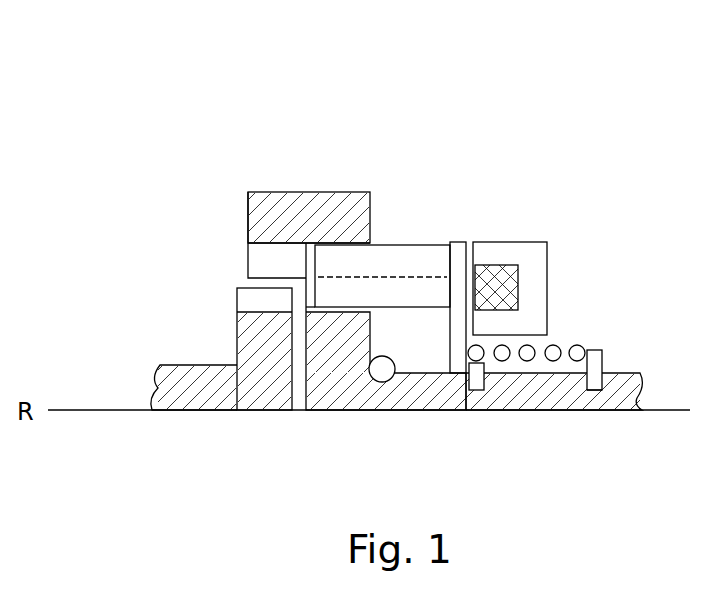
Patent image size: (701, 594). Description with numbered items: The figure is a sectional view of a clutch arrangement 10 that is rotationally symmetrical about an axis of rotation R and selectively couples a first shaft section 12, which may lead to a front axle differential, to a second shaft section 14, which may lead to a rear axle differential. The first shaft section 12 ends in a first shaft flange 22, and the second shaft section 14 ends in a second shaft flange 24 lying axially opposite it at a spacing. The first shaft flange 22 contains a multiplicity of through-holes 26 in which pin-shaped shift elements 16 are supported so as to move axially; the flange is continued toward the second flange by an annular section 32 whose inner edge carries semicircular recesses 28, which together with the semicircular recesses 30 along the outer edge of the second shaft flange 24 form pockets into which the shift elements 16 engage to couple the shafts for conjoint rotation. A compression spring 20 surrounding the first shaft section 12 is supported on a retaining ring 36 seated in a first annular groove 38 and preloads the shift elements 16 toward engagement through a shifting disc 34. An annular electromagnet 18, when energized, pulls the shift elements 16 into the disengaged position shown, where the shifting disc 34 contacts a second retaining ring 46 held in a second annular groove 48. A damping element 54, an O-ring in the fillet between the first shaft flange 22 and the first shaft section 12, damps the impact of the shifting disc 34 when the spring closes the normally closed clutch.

The clutch arrangement 10 is at (498, 118).
The first shaft section 12 is at (540, 397).
The second shaft section 14 is at (190, 378).
The shift elements 16 is at (394, 258).
The electromagnet 18 is at (528, 245).
The compression spring 20 is at (556, 347).
The first shaft flange 22 is at (350, 203).
The second shaft flange 24 is at (257, 342).
The through-holes 26 is at (320, 243).
The semicircular recesses 28 is at (262, 260).
The semicircular recesses 30 is at (265, 297).
The annular section 32 is at (262, 213).
The shifting disc 34 is at (460, 245).
The retaining ring 36 is at (593, 351).
The first annular groove 38 is at (585, 391).
The second retaining ring 46 is at (475, 391).
The second annular groove 48 is at (467, 385).
The damping element 54 is at (384, 378).